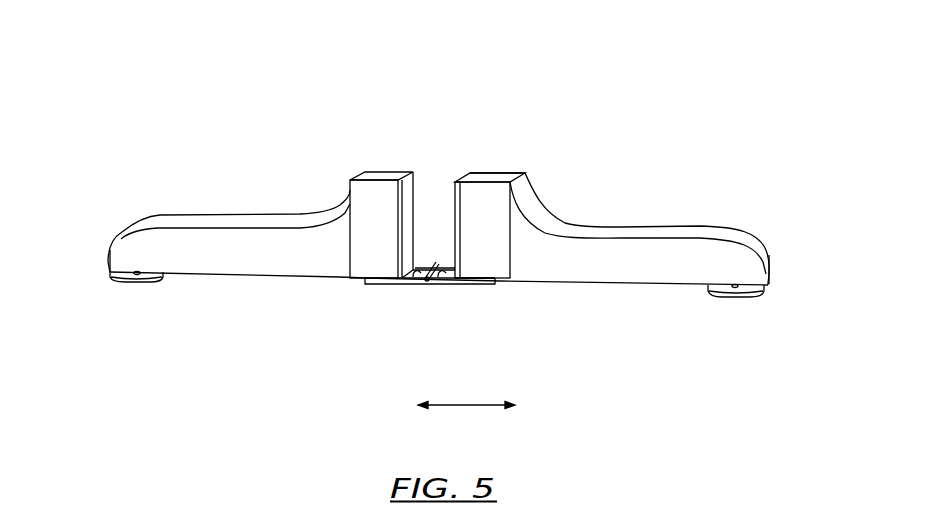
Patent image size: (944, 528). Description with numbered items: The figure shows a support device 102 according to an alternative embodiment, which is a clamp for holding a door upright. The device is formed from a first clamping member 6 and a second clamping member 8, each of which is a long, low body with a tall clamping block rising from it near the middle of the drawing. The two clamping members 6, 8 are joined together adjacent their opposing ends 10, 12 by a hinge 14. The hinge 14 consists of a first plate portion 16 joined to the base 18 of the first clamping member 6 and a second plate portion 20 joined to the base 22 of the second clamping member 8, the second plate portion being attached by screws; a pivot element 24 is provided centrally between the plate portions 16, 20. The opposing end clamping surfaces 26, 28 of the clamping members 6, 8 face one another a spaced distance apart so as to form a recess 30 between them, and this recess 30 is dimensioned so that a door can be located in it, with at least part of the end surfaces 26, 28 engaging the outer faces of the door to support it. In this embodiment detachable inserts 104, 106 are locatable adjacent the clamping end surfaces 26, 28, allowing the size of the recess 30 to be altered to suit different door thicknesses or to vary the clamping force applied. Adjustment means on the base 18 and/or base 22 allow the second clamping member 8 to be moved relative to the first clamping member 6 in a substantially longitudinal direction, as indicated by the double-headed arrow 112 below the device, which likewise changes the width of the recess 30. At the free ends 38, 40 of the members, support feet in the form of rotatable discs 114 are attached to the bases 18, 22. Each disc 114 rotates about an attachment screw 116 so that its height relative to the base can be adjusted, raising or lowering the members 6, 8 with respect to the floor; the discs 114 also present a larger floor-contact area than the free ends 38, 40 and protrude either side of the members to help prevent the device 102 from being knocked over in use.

The first clamping member 6 is at (380, 177).
The second clamping member 8 is at (507, 170).
The opposing end 10 is at (390, 284).
The opposing end 12 is at (462, 284).
The hinge 14 is at (423, 290).
The first plate portion 16 is at (410, 280).
The base 18 is at (345, 280).
The second plate portion 20 is at (433, 283).
The base 22 is at (632, 285).
The pivot element 24 is at (443, 177).
The end clamping surface 26 is at (402, 177).
The end clamping surface 28 is at (503, 173).
The recess 30 is at (437, 177).
The free end 38 is at (108, 257).
The free end 40 is at (770, 268).
The support device 102 is at (487, 102).
The detachable insert 104 is at (428, 177).
The detachable insert 106 is at (472, 173).
The arrow 112 is at (468, 407).
The rotatable disc 114 is at (150, 280).
The attachment screw 116 is at (130, 280).